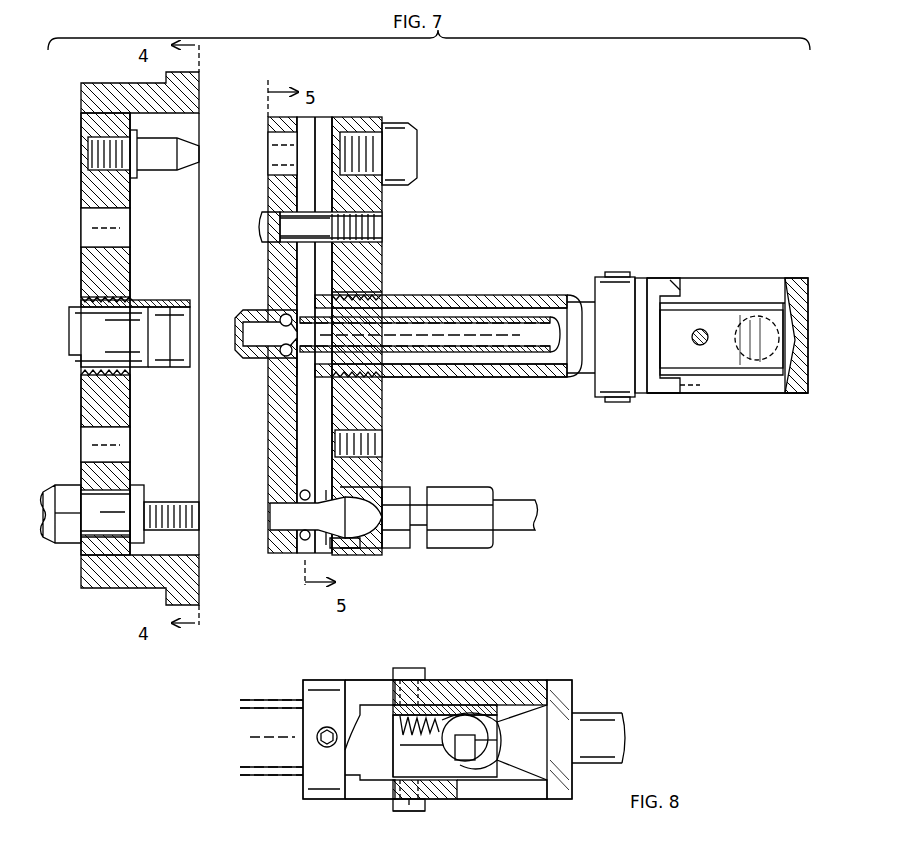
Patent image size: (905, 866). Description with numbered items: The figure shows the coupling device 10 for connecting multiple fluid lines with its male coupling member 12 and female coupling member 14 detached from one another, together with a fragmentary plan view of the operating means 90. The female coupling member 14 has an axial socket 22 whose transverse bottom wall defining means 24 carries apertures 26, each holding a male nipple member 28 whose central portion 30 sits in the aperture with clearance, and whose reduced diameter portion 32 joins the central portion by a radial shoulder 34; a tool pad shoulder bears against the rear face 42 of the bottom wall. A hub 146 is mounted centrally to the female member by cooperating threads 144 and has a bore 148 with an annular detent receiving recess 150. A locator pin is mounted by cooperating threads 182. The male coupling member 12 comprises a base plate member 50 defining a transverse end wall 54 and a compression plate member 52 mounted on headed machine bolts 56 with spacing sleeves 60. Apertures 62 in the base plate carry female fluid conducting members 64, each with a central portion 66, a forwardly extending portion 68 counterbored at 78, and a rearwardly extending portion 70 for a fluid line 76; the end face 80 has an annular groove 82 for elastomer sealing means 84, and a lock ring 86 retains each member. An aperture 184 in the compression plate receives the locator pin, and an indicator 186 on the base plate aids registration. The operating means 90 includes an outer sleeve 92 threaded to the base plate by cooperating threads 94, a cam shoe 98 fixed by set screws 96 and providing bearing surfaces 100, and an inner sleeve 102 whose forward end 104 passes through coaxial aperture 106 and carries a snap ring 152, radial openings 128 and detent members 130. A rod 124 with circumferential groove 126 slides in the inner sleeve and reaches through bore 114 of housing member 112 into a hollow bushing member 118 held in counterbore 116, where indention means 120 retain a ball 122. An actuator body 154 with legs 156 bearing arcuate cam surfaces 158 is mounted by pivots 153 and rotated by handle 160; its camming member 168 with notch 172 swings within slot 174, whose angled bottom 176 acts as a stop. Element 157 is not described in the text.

In FIG. 7, the coupling device 10 is at (518, 130).
In FIG. 7, the male coupling member 12 is at (355, 113).
In FIG. 7, the female coupling member 14 is at (78, 96).
In FIG. 7, the socket 22 is at (166, 470).
In FIG. 7, the transverse bottom wall defining means 24 is at (80, 407).
In FIG. 7, the aperture 26 is at (80, 534).
In FIG. 7, the male nipple member 28 is at (102, 500).
In FIG. 7, the central portion 30 is at (108, 538).
In FIG. 7, the reduced diameter portion 32 is at (178, 528).
In FIG. 7, the radial shoulder 34 is at (140, 540).
In FIG. 7, the rear face 42 is at (80, 185).
In FIG. 7, the base plate member 50 is at (385, 465).
In FIG. 7, the compression plate member 52 is at (282, 184).
In FIG. 7, the transverse end wall 54 is at (330, 268).
In FIG. 7, the headed machine bolt 56 is at (378, 228).
In FIG. 7, the sleeve 60 is at (358, 212).
In FIG. 7, the aperture 62 is at (395, 532).
In FIG. 7, the female fluid conducting member 64 is at (375, 497).
In FIG. 7, the central portion 66 is at (340, 548).
In FIG. 7, the forwardly extending portion 68 is at (318, 545).
In FIG. 7, the rearwardly extending portion 70 is at (432, 527).
In FIG. 7, the fluid line 76 is at (540, 506).
In FIG. 7, the counterbore 78 is at (312, 506).
In FIG. 7, the end face 80 is at (300, 492).
In FIG. 7, the annular groove 82 is at (300, 540).
In FIG. 7, the elastomer sealing means 84 is at (298, 503).
In FIG. 7, the lock ring 86 is at (350, 455).
In FIG. 7, the operating means 90 is at (718, 438).
In FIG. 8, the operating means 90 is at (318, 812).
In FIG. 7, the outer sleeve 92 is at (455, 293).
In FIG. 8, the outer sleeve 92 is at (258, 778).
In FIG. 7, the cooperating threads 94 is at (372, 292).
In FIG. 7, the set screw 96 is at (612, 275).
In FIG. 8, the set screw 96 is at (318, 736).
In FIG. 7, the cam shoe 98 is at (645, 396).
In FIG. 8, the cam shoe 98 is at (320, 678).
In FIG. 7, the bearing surface 100 is at (655, 300).
In FIG. 8, the bearing surface 100 is at (368, 682).
In FIG. 7, the inner sleeve 102 is at (442, 378).
In FIG. 7, the forward end 104 is at (256, 322).
In FIG. 7, the coaxial aperture 106 is at (290, 375).
In FIG. 7, the housing member 112 is at (733, 360).
In FIG. 8, the housing member 112 is at (462, 712).
In FIG. 7, the bore 114 is at (482, 346).
In FIG. 8, the counterbore 116 is at (455, 705).
In FIG. 8, the hollow bushing member 118 is at (488, 714).
In FIG. 8, the indention means 120 is at (500, 733).
In FIG. 7, the ball 122 is at (762, 360).
In FIG. 8, the ball 122 is at (466, 762).
In FIG. 7, the rod 124 is at (520, 332).
In FIG. 7, the circumferential groove 126 is at (342, 312).
In FIG. 7, the radial opening 128 is at (283, 356).
In FIG. 7, the detent member 130 is at (282, 315).
In FIG. 7, the cooperating threads 144 is at (100, 372).
In FIG. 7, the hub 146 is at (76, 303).
In FIG. 7, the bore 148 is at (92, 332).
In FIG. 7, the detent receiving recess 150 is at (165, 300).
In FIG. 7, the snap ring 152 is at (322, 372).
In FIG. 7, the pivot 153 is at (703, 330).
In FIG. 8, the pivot 153 is at (410, 811).
In FIG. 7, the body 154 is at (700, 396).
In FIG. 8, the body 154 is at (572, 688).
In FIG. 7, the leg 156 is at (768, 285).
In FIG. 8, the leg 156 is at (432, 684).
In FIG. 8, the bolt 157 is at (417, 838).
In FIG. 7, the arcuate cam surface 158 is at (675, 278).
In FIG. 8, the arcuate cam surface 158 is at (362, 715).
In FIG. 8, the handle 160 is at (625, 734).
In FIG. 8, the camming member 168 is at (500, 740).
In FIG. 8, the notch 172 is at (492, 742).
In FIG. 8, the slot 174 is at (505, 755).
In FIG. 8, the slot bottom 176 is at (495, 752).
In FIG. 7, the cooperating threads 182 is at (98, 138).
In FIG. 7, the aperture 184 is at (282, 142).
In FIG. 7, the indicator 186 is at (420, 140).